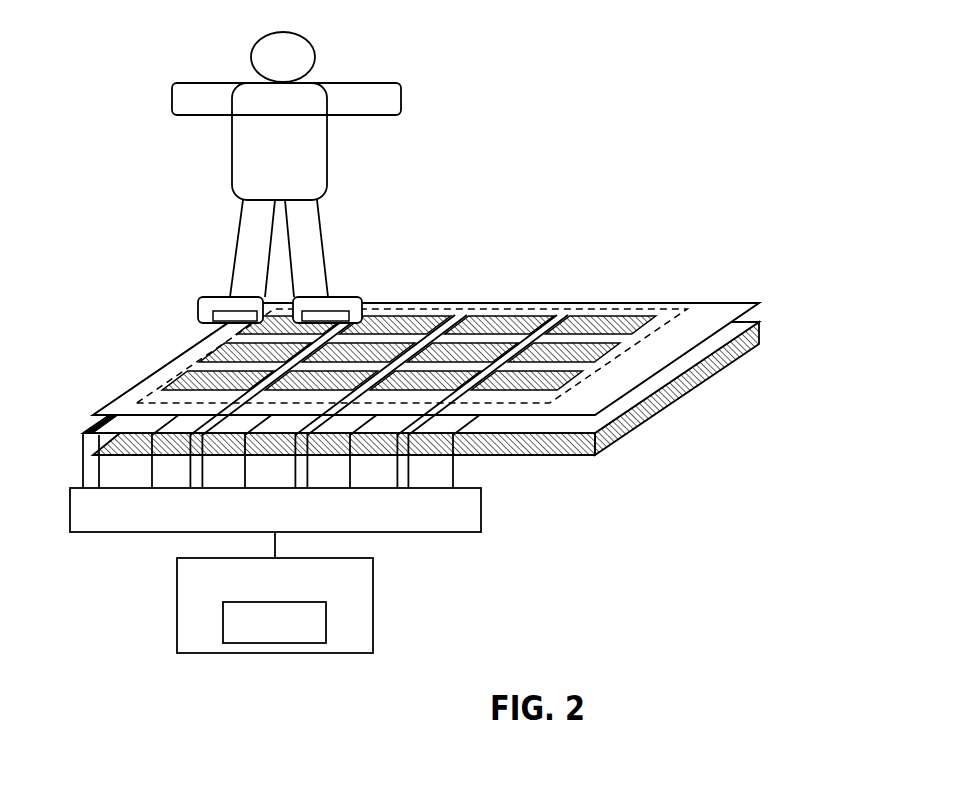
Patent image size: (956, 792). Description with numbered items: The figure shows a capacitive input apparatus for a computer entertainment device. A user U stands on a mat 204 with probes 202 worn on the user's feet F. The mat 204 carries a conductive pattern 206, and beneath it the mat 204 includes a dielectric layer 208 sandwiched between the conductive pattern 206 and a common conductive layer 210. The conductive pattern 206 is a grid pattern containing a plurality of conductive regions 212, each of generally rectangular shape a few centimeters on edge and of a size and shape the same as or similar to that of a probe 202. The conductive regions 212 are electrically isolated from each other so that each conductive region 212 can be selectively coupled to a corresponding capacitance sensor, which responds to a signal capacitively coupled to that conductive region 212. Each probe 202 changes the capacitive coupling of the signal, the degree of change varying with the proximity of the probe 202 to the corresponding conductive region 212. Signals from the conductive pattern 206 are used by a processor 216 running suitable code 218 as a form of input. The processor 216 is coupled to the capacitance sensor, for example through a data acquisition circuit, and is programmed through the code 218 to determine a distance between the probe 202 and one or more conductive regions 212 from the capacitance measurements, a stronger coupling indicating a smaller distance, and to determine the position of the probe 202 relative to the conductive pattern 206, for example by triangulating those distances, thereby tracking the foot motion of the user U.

The user U is at (327, 168).
The feet F is at (197, 299).
The probe 202 is at (213, 316).
The mat 204 is at (444, 402).
The conductive pattern 206 is at (667, 321).
The dielectric layer 208 is at (680, 368).
The common conductive layer 210 is at (637, 423).
The conductive region 212 is at (519, 330).
The processor 216 is at (298, 605).
The code 218 is at (223, 622).